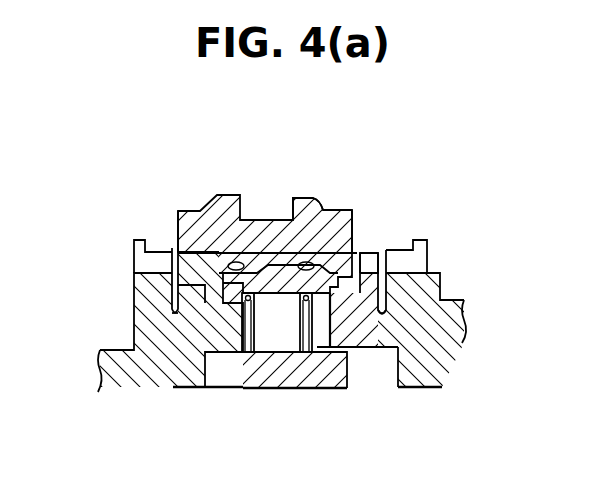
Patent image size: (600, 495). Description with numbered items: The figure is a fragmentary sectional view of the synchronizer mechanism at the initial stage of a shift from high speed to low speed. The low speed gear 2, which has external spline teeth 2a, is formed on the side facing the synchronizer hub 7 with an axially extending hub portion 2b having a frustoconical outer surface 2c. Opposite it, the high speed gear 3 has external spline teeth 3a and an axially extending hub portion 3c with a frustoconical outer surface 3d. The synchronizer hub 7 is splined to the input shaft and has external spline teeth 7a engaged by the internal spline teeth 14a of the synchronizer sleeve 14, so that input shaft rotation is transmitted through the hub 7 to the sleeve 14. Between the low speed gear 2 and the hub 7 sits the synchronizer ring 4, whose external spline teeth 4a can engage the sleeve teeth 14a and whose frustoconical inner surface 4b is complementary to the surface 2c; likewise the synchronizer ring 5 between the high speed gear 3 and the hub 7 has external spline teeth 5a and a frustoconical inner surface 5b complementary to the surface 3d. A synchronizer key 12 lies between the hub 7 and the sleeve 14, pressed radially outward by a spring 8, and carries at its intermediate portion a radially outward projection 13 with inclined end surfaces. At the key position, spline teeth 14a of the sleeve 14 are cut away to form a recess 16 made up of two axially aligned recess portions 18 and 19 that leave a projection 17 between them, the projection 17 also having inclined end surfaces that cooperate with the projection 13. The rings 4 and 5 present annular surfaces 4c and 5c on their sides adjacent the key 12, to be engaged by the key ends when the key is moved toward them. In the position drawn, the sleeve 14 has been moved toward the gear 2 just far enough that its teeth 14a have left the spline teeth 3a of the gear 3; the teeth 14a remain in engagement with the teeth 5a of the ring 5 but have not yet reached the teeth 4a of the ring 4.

The low speed gear 2 is at (425, 276).
The external spline teeth 2a is at (400, 257).
The hub portion 2b is at (340, 352).
The frustoconical outer surface 2c is at (384, 310).
The high speed gear 3 is at (153, 272).
The external spline teeth 3a is at (132, 246).
The hub portion 3c is at (225, 378).
The frustoconical outer surface 3d is at (177, 304).
The synchronizer ring 4 is at (380, 298).
The external spline teeth 4a is at (368, 262).
The frustoconical inner surface 4b is at (332, 323).
The annular surface 4c is at (361, 255).
The synchronizer ring 5 is at (176, 262).
The external spline teeth 5a is at (184, 214).
The frustoconical inner surface 5b is at (203, 374).
The annular surface 5c is at (218, 260).
The synchronizer hub 7 is at (297, 368).
The external spline teeth 7a is at (224, 305).
The spring 8 is at (250, 355).
The synchronizer key 12 is at (277, 296).
The radially outward projection 13 is at (283, 225).
The synchronizer sleeve 14 is at (233, 200).
The internal spline teeth 14a is at (186, 208).
The recess 16 is at (347, 265).
The projection 17 is at (267, 252).
The recess portion 18 is at (250, 250).
The recess portion 19 is at (310, 262).